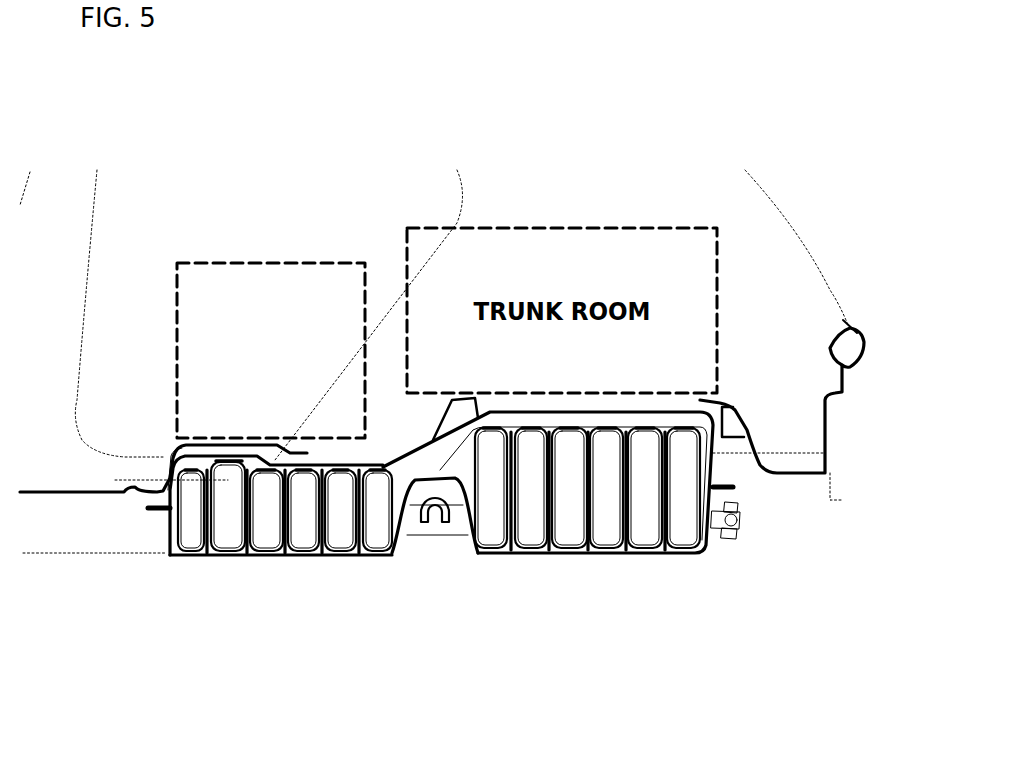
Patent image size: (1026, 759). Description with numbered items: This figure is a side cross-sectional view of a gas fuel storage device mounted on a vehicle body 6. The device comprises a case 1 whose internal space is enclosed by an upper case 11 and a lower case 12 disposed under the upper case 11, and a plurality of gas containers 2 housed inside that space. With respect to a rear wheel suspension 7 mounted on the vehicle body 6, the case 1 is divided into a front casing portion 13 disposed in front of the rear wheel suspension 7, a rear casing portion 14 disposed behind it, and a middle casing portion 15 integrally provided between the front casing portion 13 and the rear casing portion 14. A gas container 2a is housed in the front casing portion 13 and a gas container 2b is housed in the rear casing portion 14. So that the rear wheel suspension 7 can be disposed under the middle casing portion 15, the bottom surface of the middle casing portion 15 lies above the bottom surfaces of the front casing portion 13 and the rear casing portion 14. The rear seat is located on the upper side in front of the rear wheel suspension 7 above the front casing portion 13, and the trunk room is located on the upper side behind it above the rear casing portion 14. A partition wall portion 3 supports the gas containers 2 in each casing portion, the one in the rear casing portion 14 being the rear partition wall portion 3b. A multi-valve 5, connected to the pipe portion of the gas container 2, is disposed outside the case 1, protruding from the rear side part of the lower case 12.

The case 1 is at (376, 500).
The upper case 11 is at (170, 445).
The lower case 12 is at (168, 552).
The gas containers 2 is at (482, 401).
The gas container 2a is at (249, 463).
The gas container 2b is at (621, 520).
The partition wall portion 3 is at (806, 396).
The rear partition wall portion 3b is at (723, 410).
The multi-valve 5 is at (737, 520).
The vehicle body 6 is at (500, 197).
The rear wheel suspension 7 is at (430, 515).
The front casing portion 13 is at (393, 598).
The rear casing portion 14 is at (705, 605).
The middle casing portion 15 is at (416, 401).